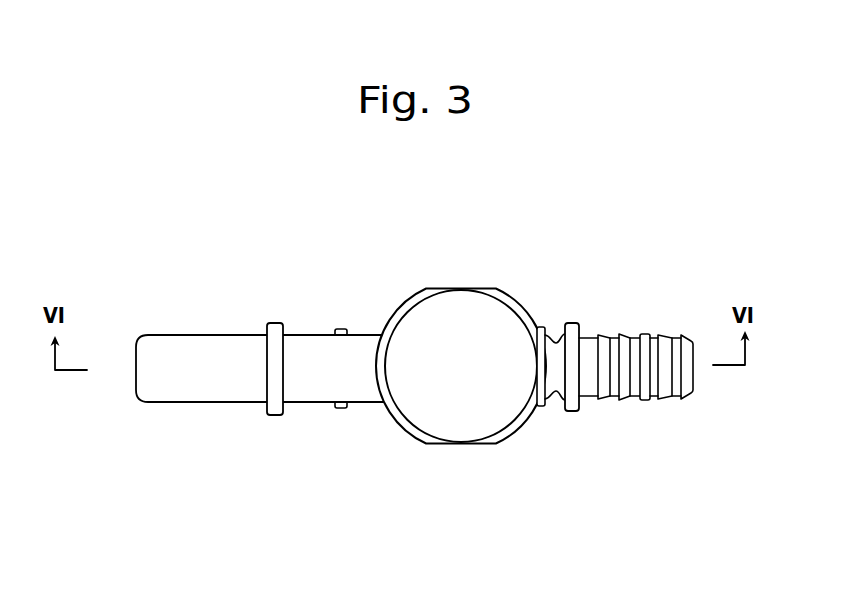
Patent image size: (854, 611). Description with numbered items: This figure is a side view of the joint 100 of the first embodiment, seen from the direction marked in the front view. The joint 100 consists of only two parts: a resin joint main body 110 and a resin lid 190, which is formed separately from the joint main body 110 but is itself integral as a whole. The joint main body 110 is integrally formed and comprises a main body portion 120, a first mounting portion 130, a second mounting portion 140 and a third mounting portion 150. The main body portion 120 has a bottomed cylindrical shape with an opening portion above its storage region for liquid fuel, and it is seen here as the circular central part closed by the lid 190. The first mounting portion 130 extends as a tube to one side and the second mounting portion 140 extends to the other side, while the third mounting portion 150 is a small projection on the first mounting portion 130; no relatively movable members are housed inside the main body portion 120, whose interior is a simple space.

The joint 100 is at (307, 298).
The joint main body 110 is at (545, 328).
The main body portion 120 is at (398, 305).
The first mounting portion 130 is at (192, 335).
The second mounting portion 140 is at (645, 333).
The third mounting portion 150 is at (340, 407).
The lid 190 is at (465, 313).